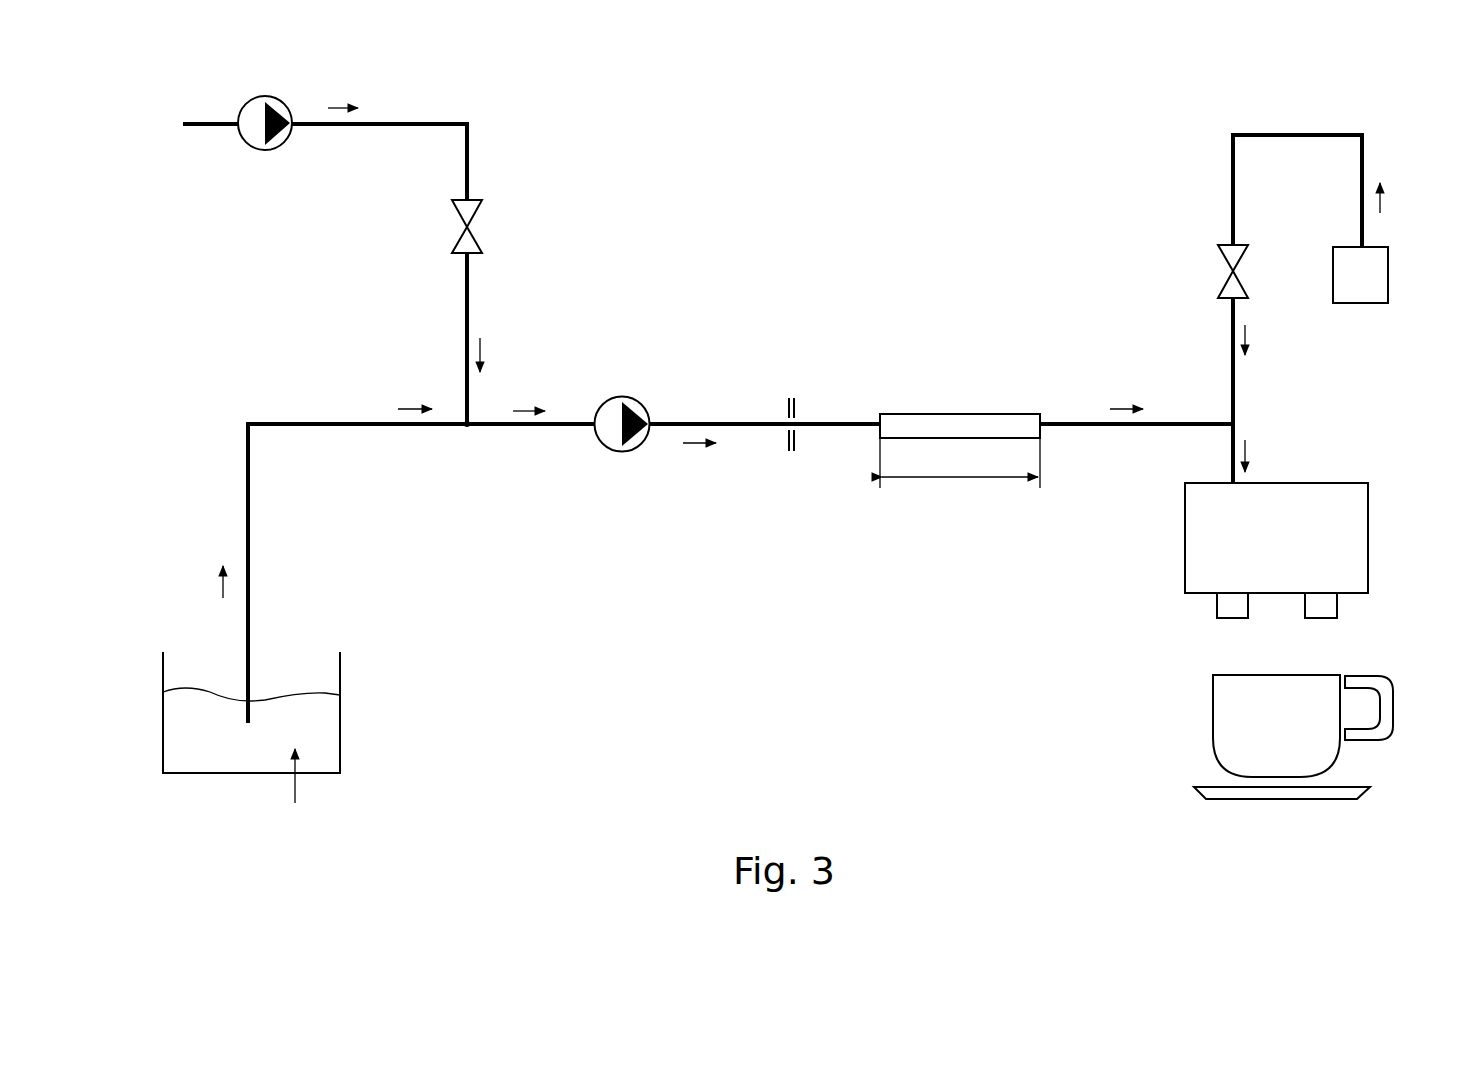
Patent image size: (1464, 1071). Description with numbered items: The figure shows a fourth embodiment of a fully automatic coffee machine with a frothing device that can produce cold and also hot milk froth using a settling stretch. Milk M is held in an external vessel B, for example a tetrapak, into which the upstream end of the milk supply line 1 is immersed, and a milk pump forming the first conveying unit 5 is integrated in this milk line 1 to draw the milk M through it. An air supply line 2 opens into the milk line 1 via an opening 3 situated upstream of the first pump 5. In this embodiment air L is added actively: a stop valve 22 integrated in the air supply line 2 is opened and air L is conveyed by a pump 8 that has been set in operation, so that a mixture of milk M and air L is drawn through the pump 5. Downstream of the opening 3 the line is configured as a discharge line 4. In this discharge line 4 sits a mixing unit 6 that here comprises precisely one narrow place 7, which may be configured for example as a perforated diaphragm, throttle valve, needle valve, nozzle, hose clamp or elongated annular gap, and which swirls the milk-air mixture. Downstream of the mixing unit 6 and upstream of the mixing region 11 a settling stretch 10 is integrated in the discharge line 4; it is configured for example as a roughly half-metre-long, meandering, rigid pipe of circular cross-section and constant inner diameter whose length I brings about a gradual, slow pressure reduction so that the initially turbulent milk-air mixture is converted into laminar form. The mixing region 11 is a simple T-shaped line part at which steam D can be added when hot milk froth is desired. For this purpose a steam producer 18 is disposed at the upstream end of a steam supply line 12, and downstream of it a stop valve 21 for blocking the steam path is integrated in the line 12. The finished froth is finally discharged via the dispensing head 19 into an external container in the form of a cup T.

The milk supply line 1 is at (320, 420).
The air supply line 2 is at (474, 155).
The opening 3 is at (469, 434).
The discharge line 4 is at (765, 420).
The first conveying unit 5 is at (601, 449).
The mixing unit 6 is at (761, 458).
The narrow place 7 is at (786, 447).
The pump 8 is at (286, 88).
The settling stretch 10 is at (960, 411).
The mixing region 11 is at (1240, 423).
The steam supply line 12 is at (1240, 187).
The steam producer 18 is at (1360, 275).
The dispensing head 19 is at (1372, 552).
The stop valve 21 is at (1216, 258).
The stop valve 22 is at (478, 235).
The external vessel B is at (161, 735).
The cup T is at (1236, 728).
The milk M is at (246, 699).
The air L is at (343, 90).
The steam D is at (1259, 339).
The heating length I is at (957, 462).